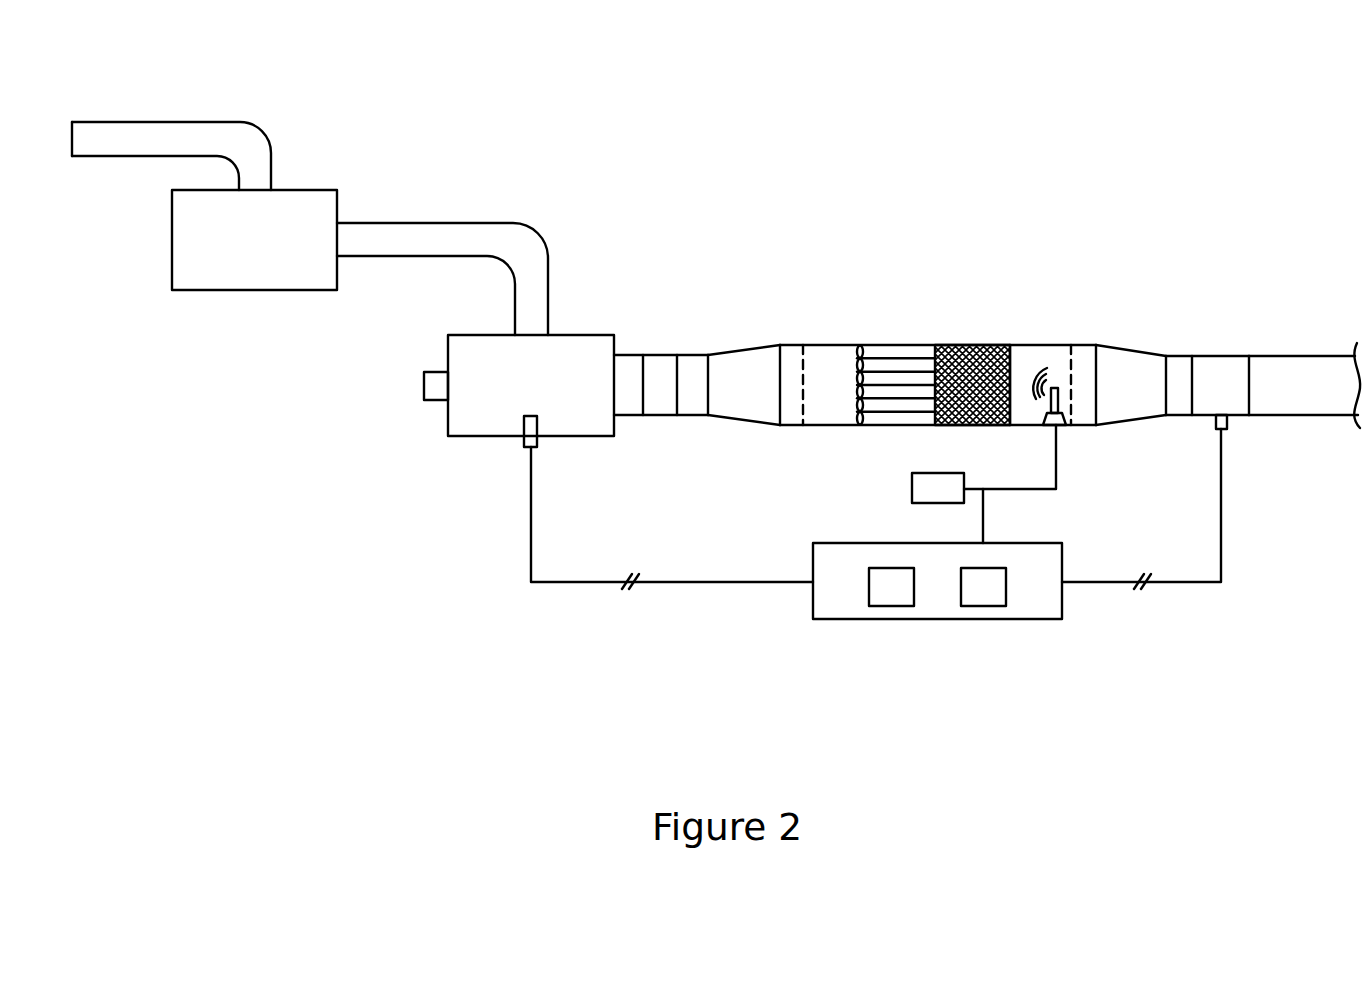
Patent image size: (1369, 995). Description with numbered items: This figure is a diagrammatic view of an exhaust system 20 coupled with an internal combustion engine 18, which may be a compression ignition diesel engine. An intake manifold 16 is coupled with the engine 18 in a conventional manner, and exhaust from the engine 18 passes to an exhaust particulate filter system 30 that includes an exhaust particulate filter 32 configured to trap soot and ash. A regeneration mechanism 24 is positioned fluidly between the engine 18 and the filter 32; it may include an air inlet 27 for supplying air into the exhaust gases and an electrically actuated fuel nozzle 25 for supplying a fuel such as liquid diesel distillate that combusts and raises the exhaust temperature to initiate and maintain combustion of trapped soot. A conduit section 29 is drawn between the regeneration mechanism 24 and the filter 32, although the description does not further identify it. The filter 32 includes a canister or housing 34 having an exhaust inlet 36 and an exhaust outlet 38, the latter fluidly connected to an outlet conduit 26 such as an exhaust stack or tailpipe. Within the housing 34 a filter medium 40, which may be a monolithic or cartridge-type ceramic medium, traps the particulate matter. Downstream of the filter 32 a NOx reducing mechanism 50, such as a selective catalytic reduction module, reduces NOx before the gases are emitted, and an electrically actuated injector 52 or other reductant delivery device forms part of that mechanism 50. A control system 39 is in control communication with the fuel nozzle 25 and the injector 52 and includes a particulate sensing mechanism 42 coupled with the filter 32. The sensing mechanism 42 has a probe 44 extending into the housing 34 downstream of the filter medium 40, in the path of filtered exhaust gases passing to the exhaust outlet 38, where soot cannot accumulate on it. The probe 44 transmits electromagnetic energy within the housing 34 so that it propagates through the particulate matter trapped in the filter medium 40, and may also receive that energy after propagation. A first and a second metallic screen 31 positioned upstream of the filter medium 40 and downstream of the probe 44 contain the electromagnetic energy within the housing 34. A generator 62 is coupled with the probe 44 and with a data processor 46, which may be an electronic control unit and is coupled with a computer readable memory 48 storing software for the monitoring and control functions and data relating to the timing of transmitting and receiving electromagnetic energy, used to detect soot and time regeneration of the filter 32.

The intake manifold 16 is at (218, 122).
The internal combustion engine 18 is at (315, 190).
The exhaust system 20 is at (1112, 264).
The regeneration mechanism 24 is at (583, 335).
The electrically actuated fuel nozzle 25 is at (524, 438).
The outlet conduit 26 is at (1318, 356).
The air inlet 27 is at (424, 385).
The exhaust conduit segment 29 is at (651, 355).
The exhaust particulate filter system 30 is at (1031, 308).
The metallic screen 31 is at (801, 360).
The exhaust particulate filter 32 is at (850, 439).
The housing 34 is at (814, 425).
The exhaust inlet 36 is at (705, 355).
The exhaust outlet 38 is at (1166, 415).
The control system 39 is at (1145, 611).
The filter medium 40 is at (892, 352).
The particulate sensing mechanism 42 is at (832, 637).
The probe 44 is at (1044, 425).
The data processor 46 is at (889, 606).
The computer readable memory 48 is at (982, 606).
The NOx reducing mechanism 50 is at (1218, 356).
The electrically actuated injector 52 is at (1228, 422).
The generator 62 is at (912, 485).